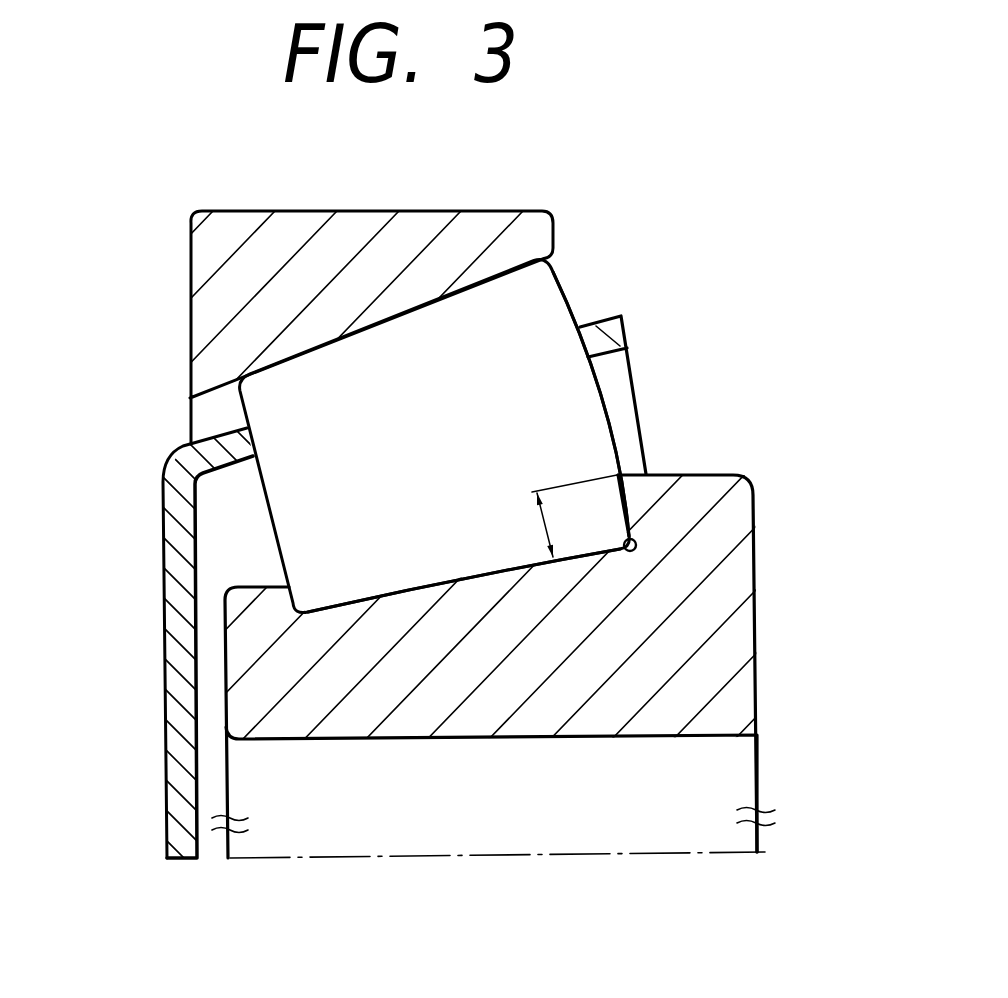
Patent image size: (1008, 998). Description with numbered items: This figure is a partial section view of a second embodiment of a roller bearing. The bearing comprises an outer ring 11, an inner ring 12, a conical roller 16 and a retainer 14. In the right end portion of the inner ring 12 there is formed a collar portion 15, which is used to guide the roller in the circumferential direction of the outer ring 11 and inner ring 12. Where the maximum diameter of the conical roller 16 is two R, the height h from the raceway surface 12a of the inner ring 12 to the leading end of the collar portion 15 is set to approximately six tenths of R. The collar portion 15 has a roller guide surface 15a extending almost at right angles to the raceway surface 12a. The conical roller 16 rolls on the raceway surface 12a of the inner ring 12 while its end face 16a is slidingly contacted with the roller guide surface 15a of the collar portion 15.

The outer ring 11 is at (204, 261).
The inner ring 12 is at (236, 671).
The raceway surface 12a is at (461, 586).
The retainer 14 is at (184, 452).
The collar portion 15 is at (743, 513).
The roller guide surface 15a is at (634, 538).
The conical roller 16 is at (292, 526).
The end face 16a is at (613, 440).